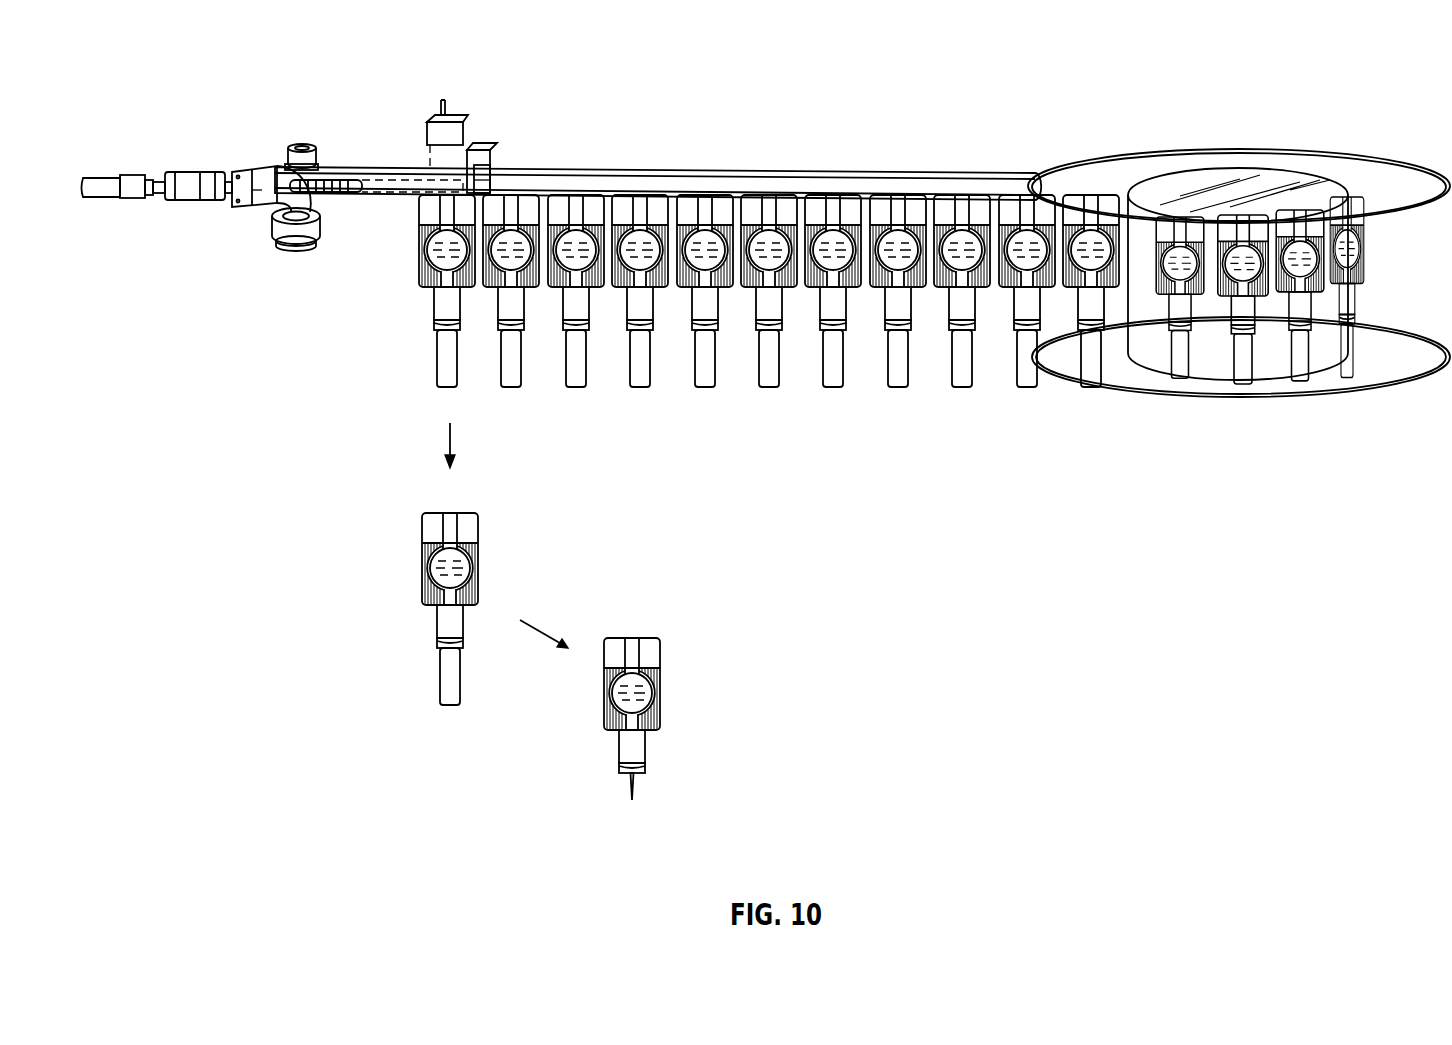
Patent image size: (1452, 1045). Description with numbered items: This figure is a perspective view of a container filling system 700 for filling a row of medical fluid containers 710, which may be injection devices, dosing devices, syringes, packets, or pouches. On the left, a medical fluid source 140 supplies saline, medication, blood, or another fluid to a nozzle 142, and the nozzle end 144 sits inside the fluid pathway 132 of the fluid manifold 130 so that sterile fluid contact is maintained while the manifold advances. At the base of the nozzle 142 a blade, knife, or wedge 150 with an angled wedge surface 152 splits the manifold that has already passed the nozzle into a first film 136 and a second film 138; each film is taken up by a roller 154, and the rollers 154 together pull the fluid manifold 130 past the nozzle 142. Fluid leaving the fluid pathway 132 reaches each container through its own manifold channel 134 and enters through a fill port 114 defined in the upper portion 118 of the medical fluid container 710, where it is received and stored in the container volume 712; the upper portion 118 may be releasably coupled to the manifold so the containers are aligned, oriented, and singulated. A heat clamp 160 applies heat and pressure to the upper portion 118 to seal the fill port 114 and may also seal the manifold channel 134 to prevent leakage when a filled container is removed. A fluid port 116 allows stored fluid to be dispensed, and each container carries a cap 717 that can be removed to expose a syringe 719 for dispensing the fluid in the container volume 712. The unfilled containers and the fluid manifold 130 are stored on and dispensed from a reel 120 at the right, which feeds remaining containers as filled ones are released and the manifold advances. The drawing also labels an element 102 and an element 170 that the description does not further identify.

The container filling system 700 is at (1362, 80).
The medical fluid source 140 is at (97, 186).
The nozzle 142 is at (182, 180).
The wedge 150 is at (252, 165).
The wedge surface 152 is at (256, 192).
The first film 136 is at (270, 213).
The roller 154 is at (298, 145).
The second film 138 is at (286, 168).
The fluid manifold 130 is at (900, 168).
The nozzle end 144 is at (333, 182).
The inner tube 102 is at (383, 184).
The heat clamp 160 is at (447, 116).
The fluid pathway 132 is at (462, 172).
The holder 170 is at (493, 175).
The manifold channel 134 is at (485, 190).
The reel 120 is at (1240, 148).
The medical fluid container 710 is at (840, 522).
The upper portion 118 is at (420, 200).
The fill port 114 is at (444, 240).
The container volume 712 is at (445, 262).
The fluid port 116 is at (458, 345).
The cap 717 is at (441, 370).
The syringe 719 is at (633, 793).